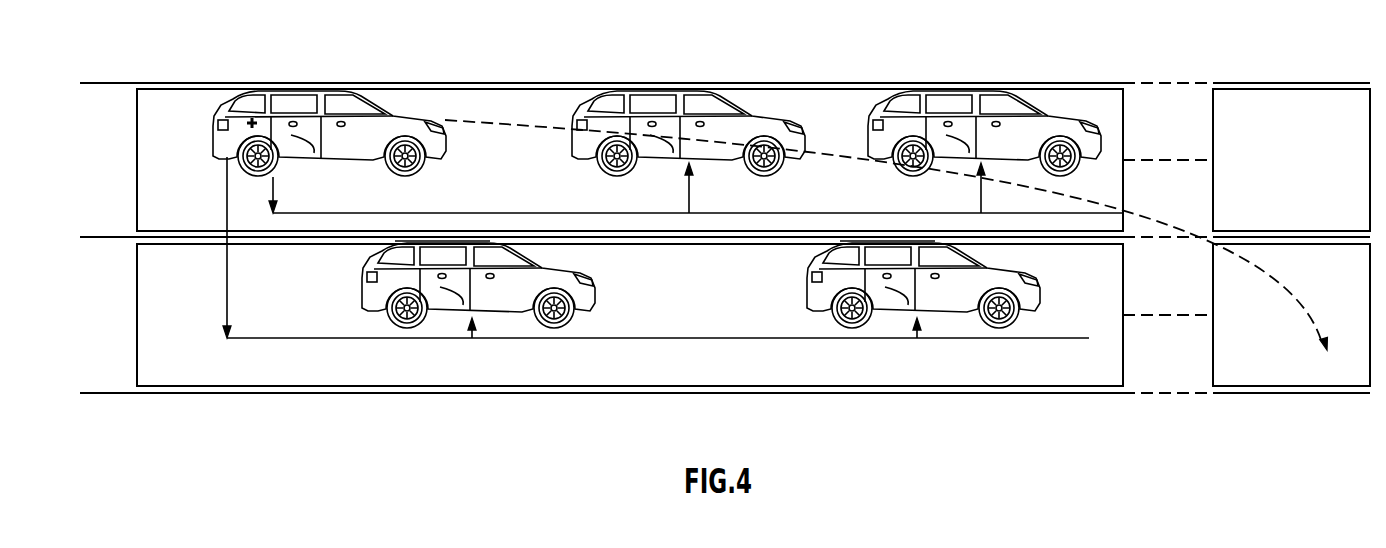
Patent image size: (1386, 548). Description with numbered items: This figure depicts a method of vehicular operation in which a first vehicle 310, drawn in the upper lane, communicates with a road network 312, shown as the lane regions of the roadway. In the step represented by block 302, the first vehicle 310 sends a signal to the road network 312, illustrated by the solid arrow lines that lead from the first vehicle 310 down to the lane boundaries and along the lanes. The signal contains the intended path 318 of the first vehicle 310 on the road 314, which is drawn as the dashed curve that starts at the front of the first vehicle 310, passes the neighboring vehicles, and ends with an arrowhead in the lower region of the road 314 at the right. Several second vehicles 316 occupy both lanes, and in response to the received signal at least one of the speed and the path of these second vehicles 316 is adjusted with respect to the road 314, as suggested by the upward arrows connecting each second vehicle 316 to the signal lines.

The block 302 is at (227, 197).
The first vehicle 310 is at (296, 88).
The road network 312 is at (137, 186).
The road 314 is at (1313, 105).
The second vehicles 316 is at (663, 88).
The intended path 318 is at (1280, 284).